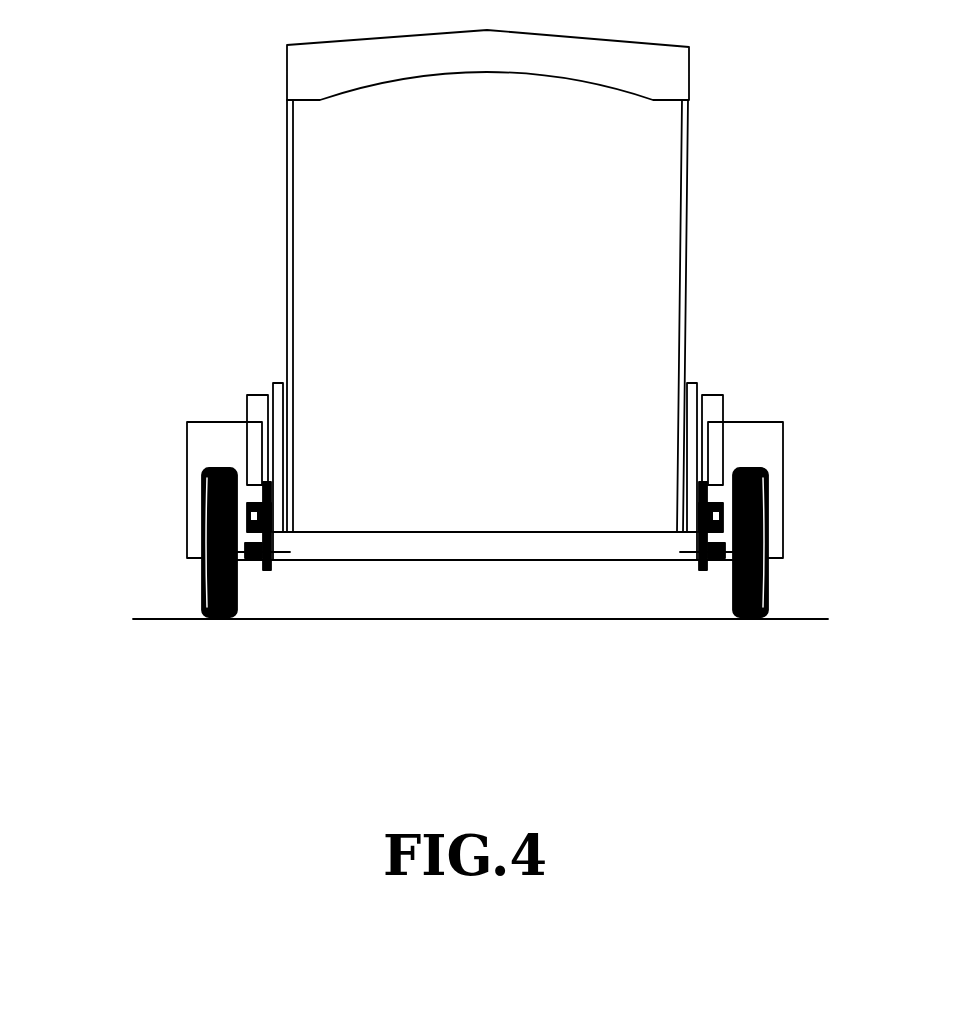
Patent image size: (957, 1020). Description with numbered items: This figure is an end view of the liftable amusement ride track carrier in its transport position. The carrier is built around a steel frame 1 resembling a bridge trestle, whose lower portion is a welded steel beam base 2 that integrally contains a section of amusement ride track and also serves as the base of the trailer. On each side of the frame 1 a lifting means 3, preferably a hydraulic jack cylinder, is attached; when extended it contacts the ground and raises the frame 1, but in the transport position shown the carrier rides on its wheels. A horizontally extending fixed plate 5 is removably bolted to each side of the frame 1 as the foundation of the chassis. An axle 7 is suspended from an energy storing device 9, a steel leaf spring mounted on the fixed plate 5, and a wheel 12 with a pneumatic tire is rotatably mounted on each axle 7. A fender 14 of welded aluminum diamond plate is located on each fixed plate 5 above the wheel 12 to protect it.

The frame 1 is at (277, 488).
The base of frame 2 is at (438, 543).
The lifting means 3 is at (257, 402).
The fixed plate 5 is at (283, 478).
The axle 7 is at (250, 555).
The energy storing device 9 is at (250, 480).
The wheel 12 is at (205, 572).
The fender 14 is at (200, 437).